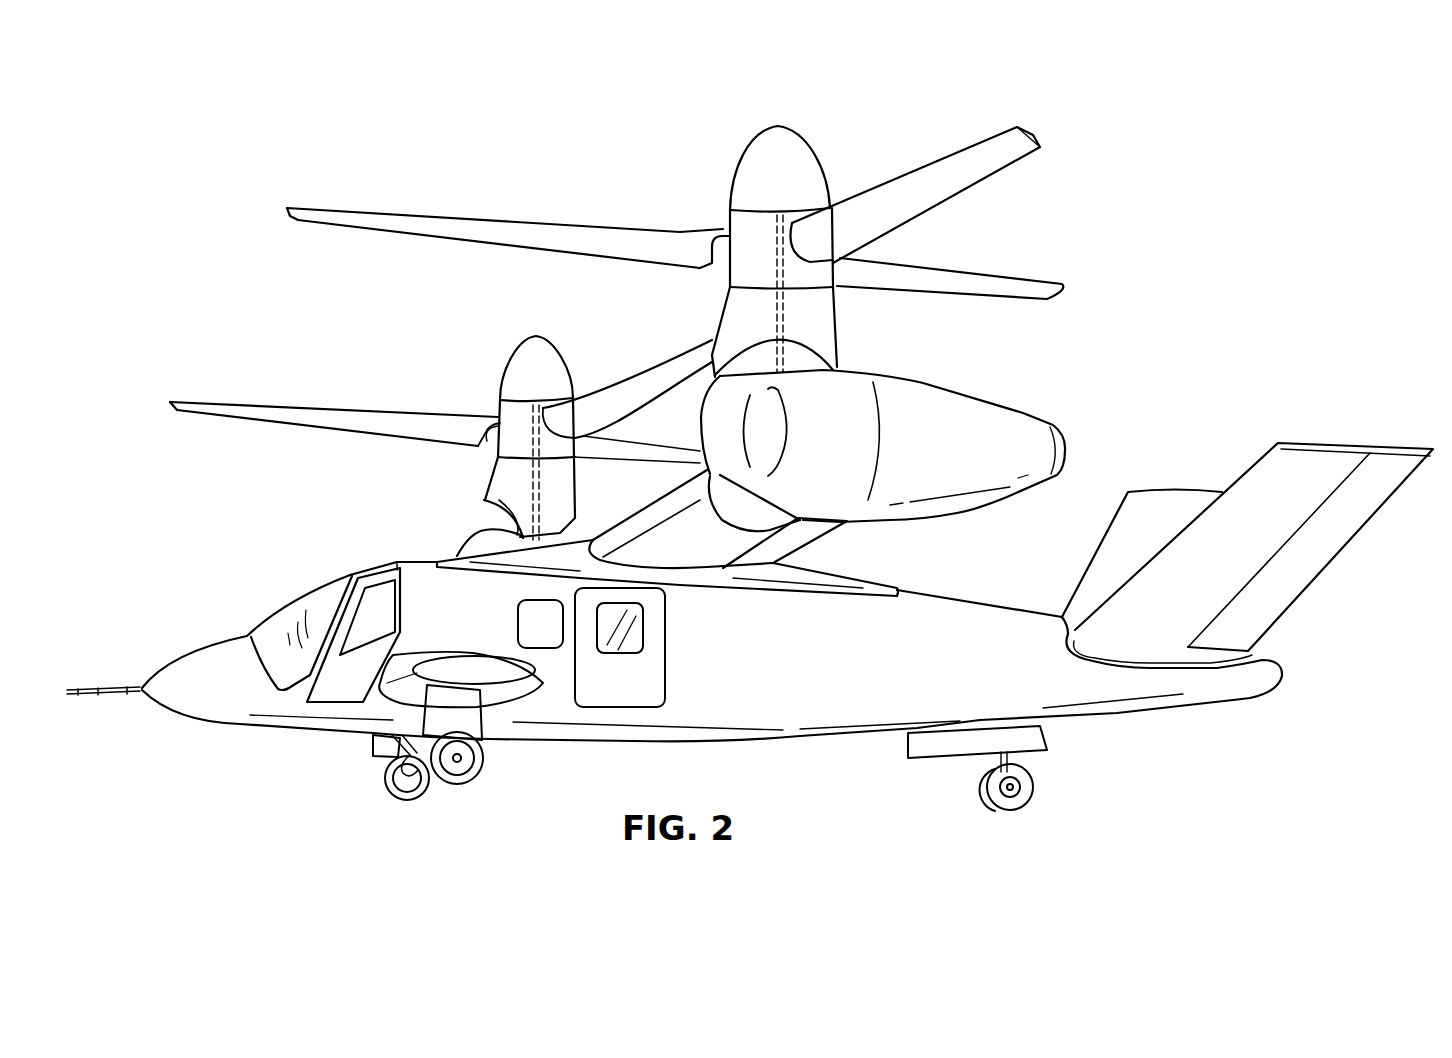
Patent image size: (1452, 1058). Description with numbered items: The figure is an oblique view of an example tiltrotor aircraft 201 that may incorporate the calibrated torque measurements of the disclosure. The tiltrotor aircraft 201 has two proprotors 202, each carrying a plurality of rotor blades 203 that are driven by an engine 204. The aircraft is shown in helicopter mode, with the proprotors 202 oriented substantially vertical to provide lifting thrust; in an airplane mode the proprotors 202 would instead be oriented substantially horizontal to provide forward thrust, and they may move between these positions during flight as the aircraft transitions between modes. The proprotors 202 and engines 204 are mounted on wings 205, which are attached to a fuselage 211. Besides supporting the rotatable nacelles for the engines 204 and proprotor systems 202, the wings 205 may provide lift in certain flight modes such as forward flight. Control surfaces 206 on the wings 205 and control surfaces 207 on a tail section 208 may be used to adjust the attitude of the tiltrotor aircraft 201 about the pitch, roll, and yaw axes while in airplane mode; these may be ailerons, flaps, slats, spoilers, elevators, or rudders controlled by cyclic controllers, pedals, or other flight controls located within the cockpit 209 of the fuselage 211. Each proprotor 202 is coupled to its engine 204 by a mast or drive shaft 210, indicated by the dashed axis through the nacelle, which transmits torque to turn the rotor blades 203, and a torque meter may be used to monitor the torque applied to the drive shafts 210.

The tiltrotor aircraft 201 is at (1196, 200).
The proprotor 202 is at (704, 173).
The rotor blades 203 is at (937, 168).
The engine 204 is at (690, 328).
The wings 205 is at (670, 532).
The control surfaces 206 is at (790, 543).
The control surfaces 207 is at (1342, 557).
The tail section 208 is at (1167, 488).
The cockpit 209 is at (290, 607).
The drive shaft 210 is at (787, 307).
The fuselage 211 is at (797, 723).